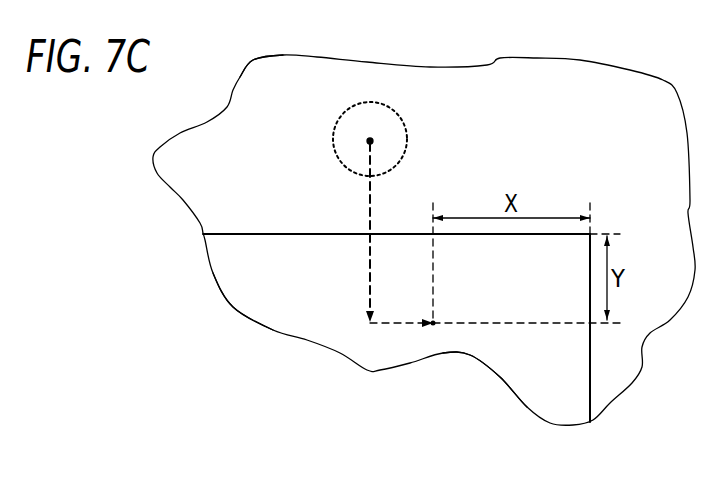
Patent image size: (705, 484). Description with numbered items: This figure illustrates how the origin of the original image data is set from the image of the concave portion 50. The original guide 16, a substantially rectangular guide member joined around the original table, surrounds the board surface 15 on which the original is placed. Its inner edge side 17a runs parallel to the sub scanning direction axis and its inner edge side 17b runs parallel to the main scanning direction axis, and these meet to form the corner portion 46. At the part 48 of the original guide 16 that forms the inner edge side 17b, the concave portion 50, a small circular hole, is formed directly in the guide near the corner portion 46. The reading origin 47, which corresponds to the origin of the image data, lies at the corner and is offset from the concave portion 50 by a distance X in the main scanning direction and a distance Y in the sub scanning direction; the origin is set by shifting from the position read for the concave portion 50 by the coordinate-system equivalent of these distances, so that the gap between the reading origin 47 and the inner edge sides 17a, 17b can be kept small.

The original guide 16 is at (552, 80).
The part forming the inner edge side 48 is at (307, 118).
The concave portion 50 is at (403, 124).
The inner edge side 17b is at (227, 237).
The inner edge side 17a is at (590, 400).
The board surface 15 is at (287, 299).
The reading origin 47 is at (433, 323).
The corner portion 46 is at (518, 347).